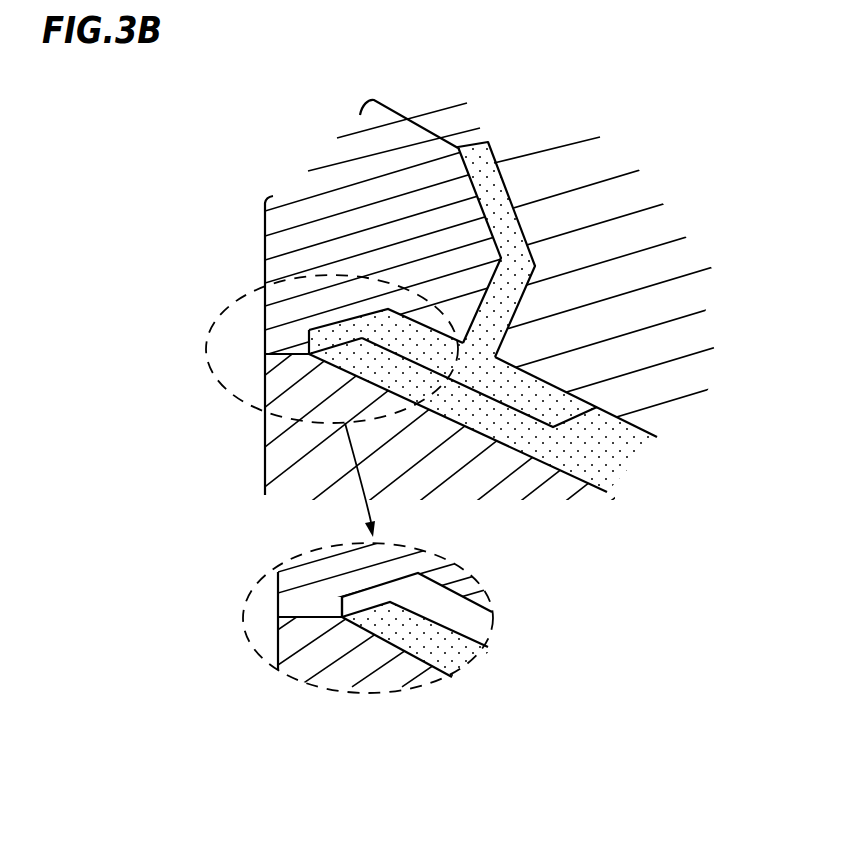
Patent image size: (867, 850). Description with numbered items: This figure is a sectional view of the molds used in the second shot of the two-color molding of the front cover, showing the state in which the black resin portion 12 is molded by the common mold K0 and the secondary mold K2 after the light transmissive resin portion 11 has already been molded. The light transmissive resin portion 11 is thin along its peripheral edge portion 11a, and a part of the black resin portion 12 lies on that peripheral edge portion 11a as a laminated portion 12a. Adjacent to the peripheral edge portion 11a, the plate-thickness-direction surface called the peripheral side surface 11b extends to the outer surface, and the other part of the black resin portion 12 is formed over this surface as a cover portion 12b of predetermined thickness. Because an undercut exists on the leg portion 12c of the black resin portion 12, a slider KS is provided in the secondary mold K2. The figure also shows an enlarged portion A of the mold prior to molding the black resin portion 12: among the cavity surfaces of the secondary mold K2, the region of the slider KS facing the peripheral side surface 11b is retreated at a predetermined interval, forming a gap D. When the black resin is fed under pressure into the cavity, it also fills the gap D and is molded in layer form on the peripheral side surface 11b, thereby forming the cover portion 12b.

The light transmissive resin portion 11 is at (608, 457).
The peripheral edge portion 11a is at (345, 367).
The peripheral side surface 11b is at (310, 341).
The black resin portion 12 is at (457, 254).
The laminated portion 12a is at (547, 397).
The cover portion 12b is at (335, 335).
The leg portion 12c is at (488, 140).
The common mold K0 is at (278, 432).
The slider KS is at (327, 228).
The secondary mold K2 is at (600, 197).
The portion of the mold A is at (219, 306).
The gap D is at (346, 598).